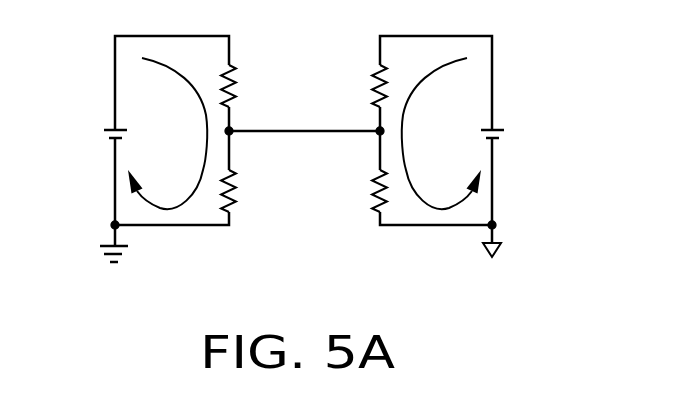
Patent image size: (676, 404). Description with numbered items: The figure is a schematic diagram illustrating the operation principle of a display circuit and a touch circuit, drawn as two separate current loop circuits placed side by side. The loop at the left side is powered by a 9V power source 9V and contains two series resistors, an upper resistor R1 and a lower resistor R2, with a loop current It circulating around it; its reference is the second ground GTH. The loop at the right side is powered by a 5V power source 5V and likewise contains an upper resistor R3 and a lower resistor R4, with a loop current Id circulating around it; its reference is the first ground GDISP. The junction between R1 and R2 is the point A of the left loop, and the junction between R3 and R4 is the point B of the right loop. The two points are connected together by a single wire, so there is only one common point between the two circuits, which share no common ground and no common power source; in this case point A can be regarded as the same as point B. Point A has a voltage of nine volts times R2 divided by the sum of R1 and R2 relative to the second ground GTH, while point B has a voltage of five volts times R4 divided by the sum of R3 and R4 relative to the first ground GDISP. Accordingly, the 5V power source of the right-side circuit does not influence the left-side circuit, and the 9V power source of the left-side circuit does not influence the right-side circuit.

The resistor R1 is at (246, 86).
The resistor R2 is at (246, 192).
The resistor R3 is at (357, 86).
The resistor R4 is at (357, 192).
The point A is at (238, 150).
The point B is at (367, 150).
The 9V power source 9V is at (90, 133).
The 5V power source 5V is at (515, 133).
The current It is at (167, 133).
The current Id is at (441, 133).
The second ground GTH is at (93, 261).
The first ground GDISP is at (504, 262).